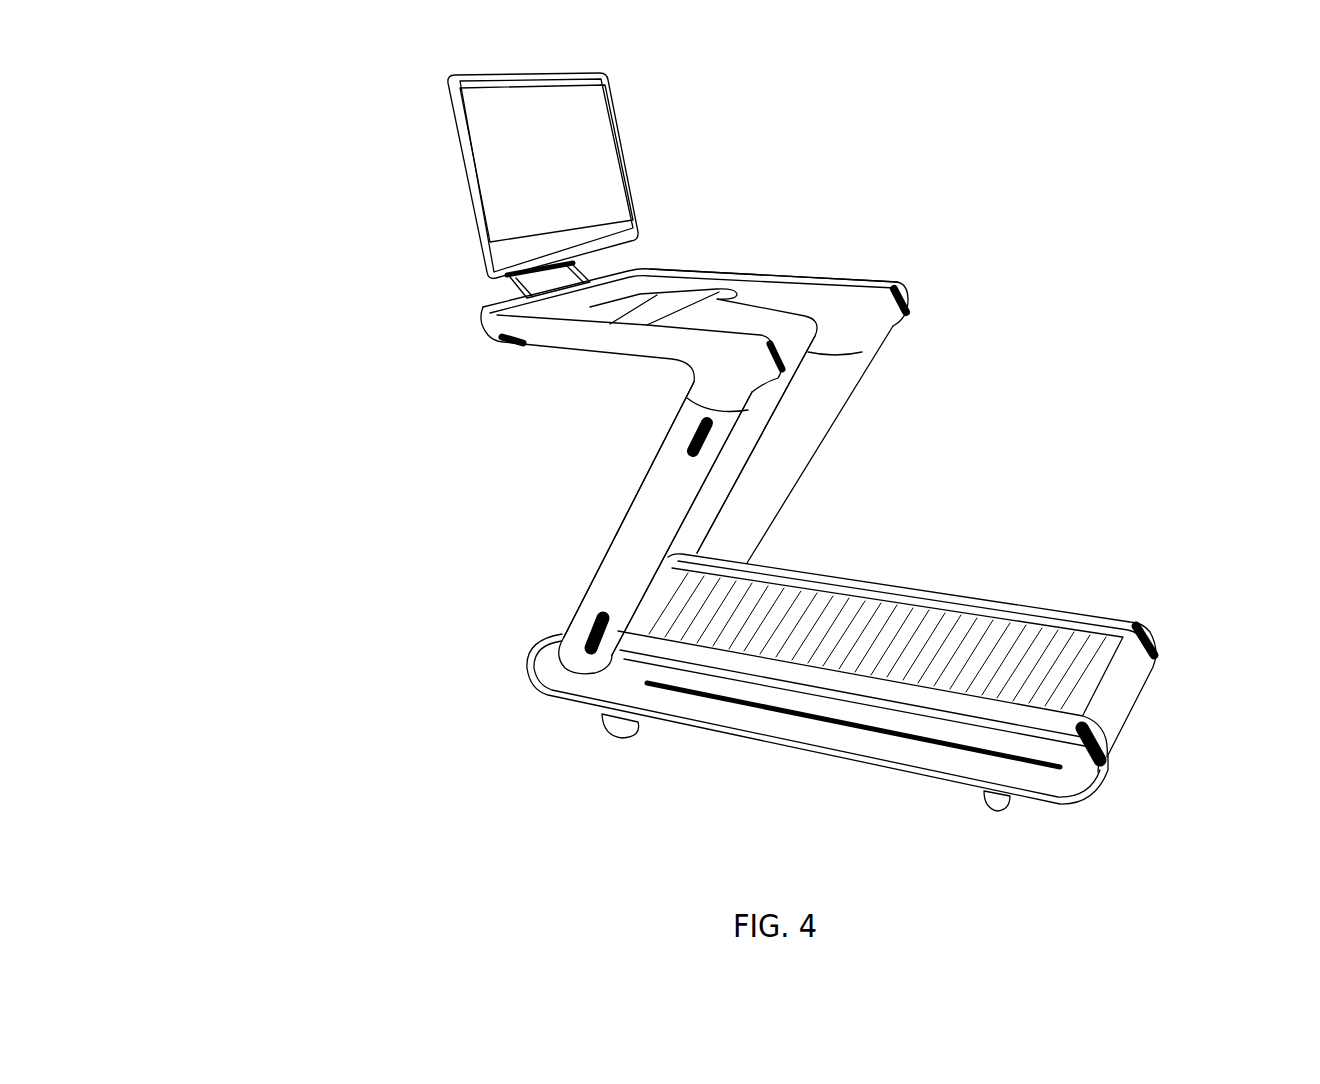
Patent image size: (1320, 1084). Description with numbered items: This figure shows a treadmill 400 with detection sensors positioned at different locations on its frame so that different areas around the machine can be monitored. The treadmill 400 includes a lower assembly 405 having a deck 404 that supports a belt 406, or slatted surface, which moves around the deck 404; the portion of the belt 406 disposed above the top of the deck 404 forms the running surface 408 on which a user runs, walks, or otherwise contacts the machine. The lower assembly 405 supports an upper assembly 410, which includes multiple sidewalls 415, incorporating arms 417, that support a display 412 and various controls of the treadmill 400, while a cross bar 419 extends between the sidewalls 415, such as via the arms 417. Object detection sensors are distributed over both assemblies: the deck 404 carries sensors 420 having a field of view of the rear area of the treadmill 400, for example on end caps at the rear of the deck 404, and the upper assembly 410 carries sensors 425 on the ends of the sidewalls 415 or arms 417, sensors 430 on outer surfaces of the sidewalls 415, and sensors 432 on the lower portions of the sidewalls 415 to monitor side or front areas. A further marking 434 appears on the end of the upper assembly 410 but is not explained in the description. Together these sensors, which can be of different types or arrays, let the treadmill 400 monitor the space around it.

The treadmill 400 is at (702, 448).
The upper assembly 410 is at (676, 364).
The display 412 is at (455, 155).
The cross bar 419 is at (730, 290).
The arms 417 is at (808, 278).
The sensors 425 is at (905, 290).
The port 434 is at (510, 343).
The sensors 430 is at (695, 432).
The sidewalls 415 is at (843, 397).
The sensors 432 is at (588, 620).
The lower assembly 405 is at (870, 664).
The running surface 408 is at (860, 625).
The belt 406 is at (1125, 707).
The sensors 420 is at (1150, 625).
The deck 404 is at (720, 717).